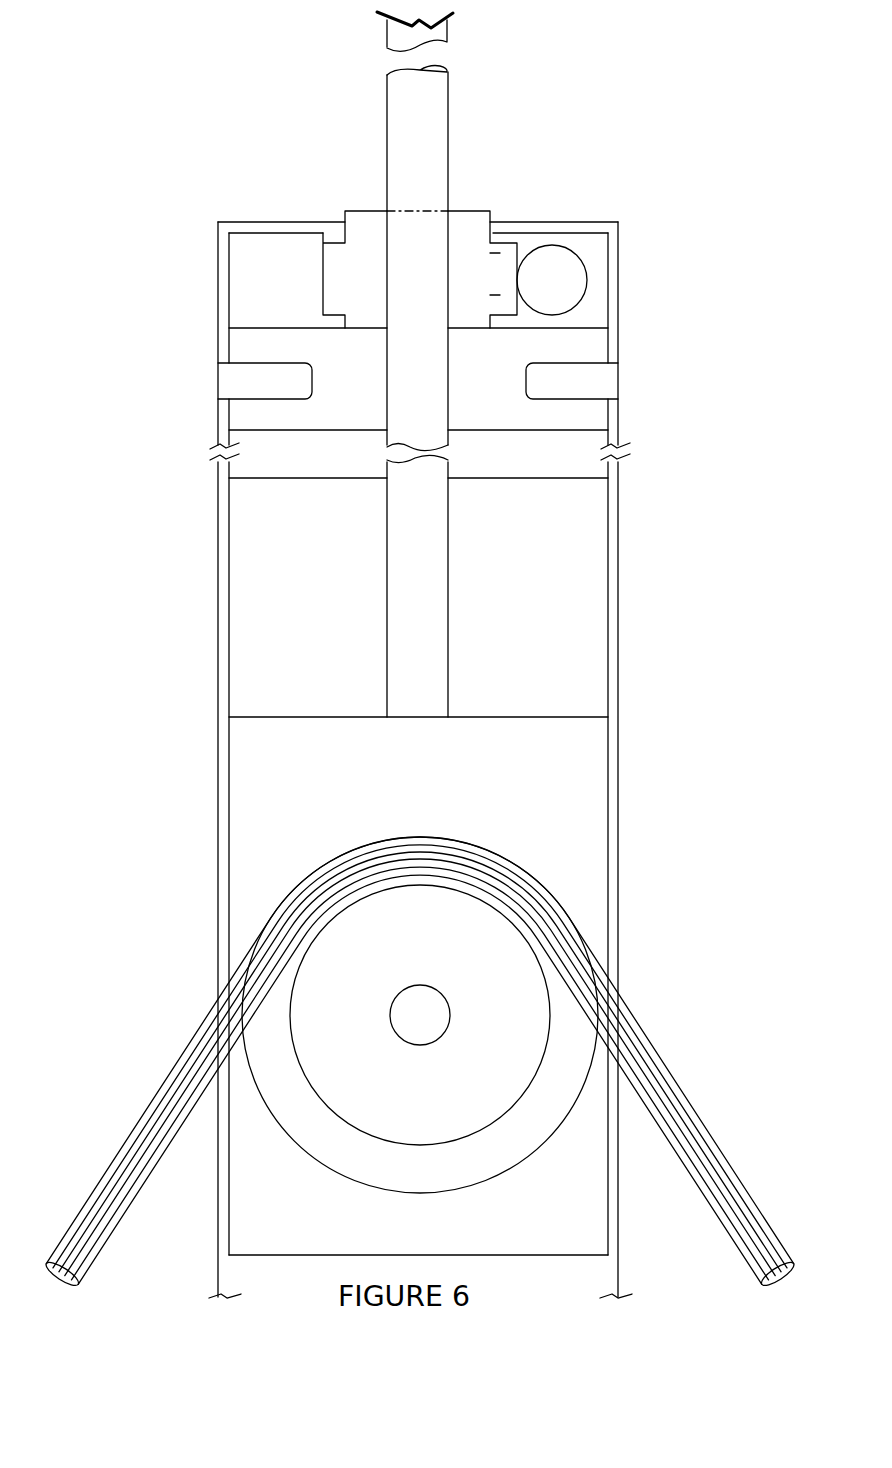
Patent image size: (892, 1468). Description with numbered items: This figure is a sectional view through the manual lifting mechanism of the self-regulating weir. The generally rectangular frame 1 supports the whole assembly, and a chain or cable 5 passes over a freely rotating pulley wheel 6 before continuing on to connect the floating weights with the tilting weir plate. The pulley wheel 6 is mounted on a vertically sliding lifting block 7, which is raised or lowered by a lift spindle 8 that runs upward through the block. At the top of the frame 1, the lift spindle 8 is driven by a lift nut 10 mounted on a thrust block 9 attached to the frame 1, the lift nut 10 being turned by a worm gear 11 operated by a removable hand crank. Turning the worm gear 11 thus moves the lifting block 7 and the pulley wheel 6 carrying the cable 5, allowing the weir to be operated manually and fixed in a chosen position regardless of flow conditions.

The frame 1 is at (618, 823).
The chains or cables 5 is at (625, 1020).
The pulley wheel 6 is at (483, 965).
The lifting block 7 is at (587, 870).
The lift spindle 8 is at (428, 635).
The thrust block 9 is at (557, 347).
The lift nut 10 is at (455, 241).
The worm gear 11 is at (551, 272).